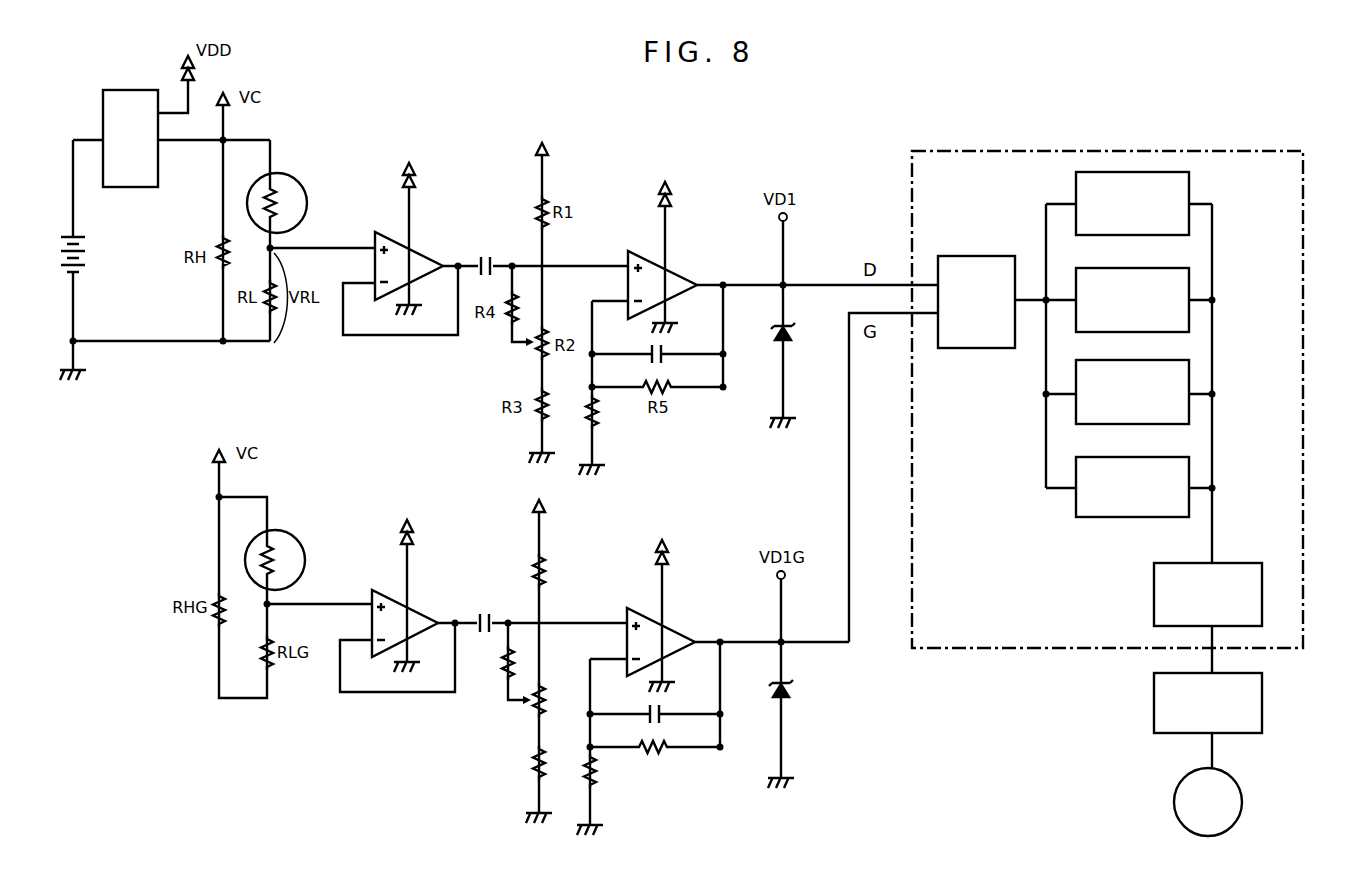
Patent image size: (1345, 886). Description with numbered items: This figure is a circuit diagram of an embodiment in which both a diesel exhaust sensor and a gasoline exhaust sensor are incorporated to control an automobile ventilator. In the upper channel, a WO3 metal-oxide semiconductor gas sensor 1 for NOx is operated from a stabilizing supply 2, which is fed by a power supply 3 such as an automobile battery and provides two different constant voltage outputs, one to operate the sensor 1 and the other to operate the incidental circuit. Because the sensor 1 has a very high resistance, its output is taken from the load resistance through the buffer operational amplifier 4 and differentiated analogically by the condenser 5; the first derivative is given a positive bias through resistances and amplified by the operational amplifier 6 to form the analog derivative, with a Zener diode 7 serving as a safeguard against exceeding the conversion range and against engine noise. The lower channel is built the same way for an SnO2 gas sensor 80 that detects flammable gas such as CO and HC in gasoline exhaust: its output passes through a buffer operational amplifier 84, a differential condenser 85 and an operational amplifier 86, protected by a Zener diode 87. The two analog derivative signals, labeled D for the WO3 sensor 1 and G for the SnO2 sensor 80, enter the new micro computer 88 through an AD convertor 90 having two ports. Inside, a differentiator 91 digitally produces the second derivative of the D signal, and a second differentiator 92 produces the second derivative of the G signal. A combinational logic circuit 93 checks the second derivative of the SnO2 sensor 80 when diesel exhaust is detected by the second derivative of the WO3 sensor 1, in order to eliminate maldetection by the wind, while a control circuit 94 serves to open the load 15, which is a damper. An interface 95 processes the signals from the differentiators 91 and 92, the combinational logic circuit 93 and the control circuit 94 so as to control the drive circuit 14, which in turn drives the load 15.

The gas sensor 1 is at (298, 190).
The stabilizing supply 2 is at (117, 97).
The power supply 3 is at (85, 258).
The operational amplifier for buffer 4 is at (420, 258).
The condenser for differential 5 is at (487, 252).
The operational amplifier 6 is at (673, 277).
The Zener diode for safeguard 7 is at (795, 338).
The drive circuit 14 is at (1157, 699).
The load 15 is at (1177, 790).
The SnO2 gas sensor 80 is at (297, 547).
The operational amplifier for buffer 84 is at (417, 613).
The differential condenser 85 is at (485, 610).
The operational amplifier 86 is at (670, 637).
The Zener diode for safeguard 87 is at (792, 693).
The micro computer 88 is at (959, 650).
The AD convertor 90 is at (967, 348).
The differentiator for the second differential 91 is at (1180, 282).
The second differentiator 92 is at (1180, 377).
The combinational logic circuit 93 is at (1185, 185).
The control circuit 94 is at (1177, 471).
The interface 95 is at (1158, 588).